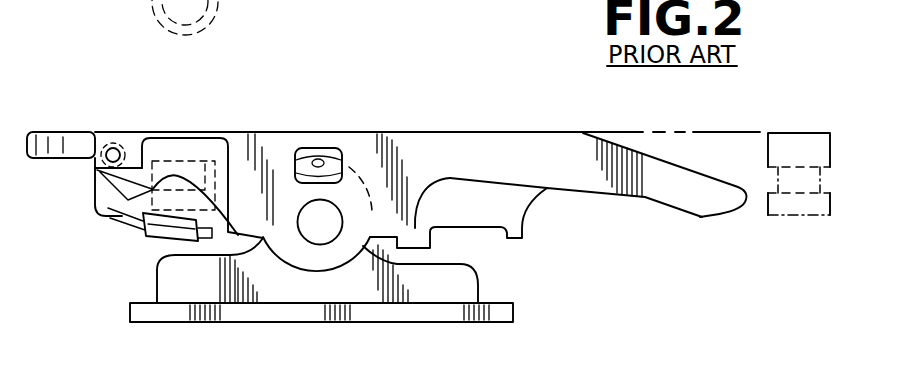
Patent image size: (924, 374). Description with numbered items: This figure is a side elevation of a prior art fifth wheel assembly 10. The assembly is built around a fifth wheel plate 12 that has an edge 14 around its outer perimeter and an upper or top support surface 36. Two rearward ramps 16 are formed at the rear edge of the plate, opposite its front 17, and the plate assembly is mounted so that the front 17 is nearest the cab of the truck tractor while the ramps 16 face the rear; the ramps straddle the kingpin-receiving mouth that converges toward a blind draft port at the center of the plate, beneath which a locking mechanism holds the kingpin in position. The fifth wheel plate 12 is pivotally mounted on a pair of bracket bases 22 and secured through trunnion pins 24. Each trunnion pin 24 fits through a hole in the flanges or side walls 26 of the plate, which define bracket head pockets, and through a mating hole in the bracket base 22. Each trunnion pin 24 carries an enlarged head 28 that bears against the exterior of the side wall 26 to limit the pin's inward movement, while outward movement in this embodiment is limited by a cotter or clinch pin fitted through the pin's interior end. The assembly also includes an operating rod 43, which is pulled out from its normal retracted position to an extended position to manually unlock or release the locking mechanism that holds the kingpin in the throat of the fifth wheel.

The fifth wheel assembly 10 is at (715, 226).
The fifth wheel plate 12 is at (575, 155).
The edge 14 is at (450, 132).
The rearward ramps 16 is at (668, 173).
The front 17 is at (28, 158).
The bracket bases 22 is at (462, 287).
The trunnion pins 24 is at (327, 228).
The side walls 26 is at (363, 172).
The enlarged head 28 is at (308, 218).
The top support surface 36 is at (238, 133).
The operating rod 43 is at (128, 218).